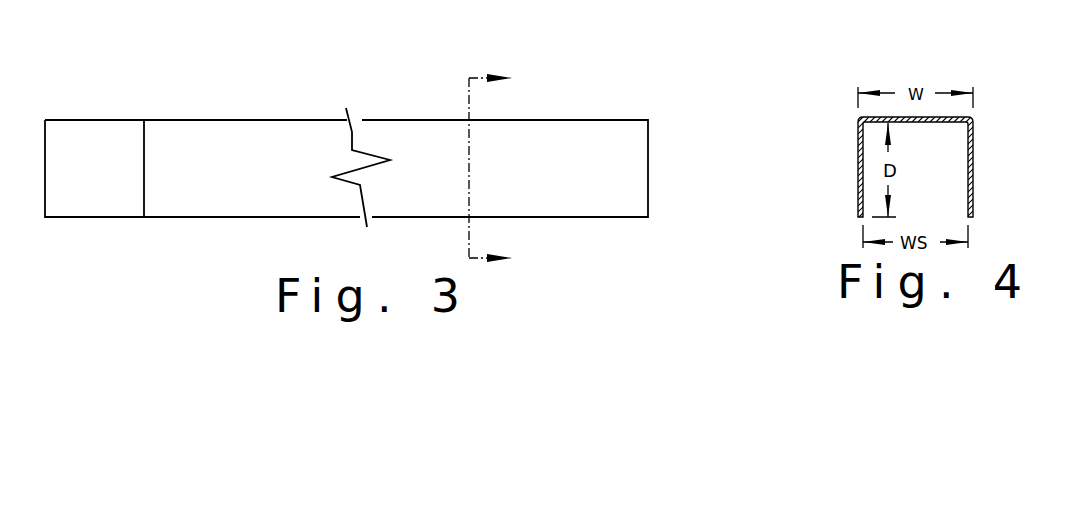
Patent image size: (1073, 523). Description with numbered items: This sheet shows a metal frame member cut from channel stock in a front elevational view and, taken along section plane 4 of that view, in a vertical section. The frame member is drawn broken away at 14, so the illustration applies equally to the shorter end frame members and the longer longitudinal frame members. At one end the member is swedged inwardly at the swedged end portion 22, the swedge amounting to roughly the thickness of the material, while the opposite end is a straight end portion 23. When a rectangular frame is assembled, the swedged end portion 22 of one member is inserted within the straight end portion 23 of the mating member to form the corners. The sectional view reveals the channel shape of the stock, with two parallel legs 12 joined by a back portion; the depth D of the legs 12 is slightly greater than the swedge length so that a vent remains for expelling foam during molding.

In FIG. 4, the legs 12 is at (858, 165).
In FIG. 3, the broken-away portion 14 is at (352, 132).
In FIG. 3, the swedged end portion 22 is at (98, 140).
In FIG. 3, the straight end portion 23 is at (610, 132).
In FIG. 3, the section plane 4- 4 is at (504, 169).